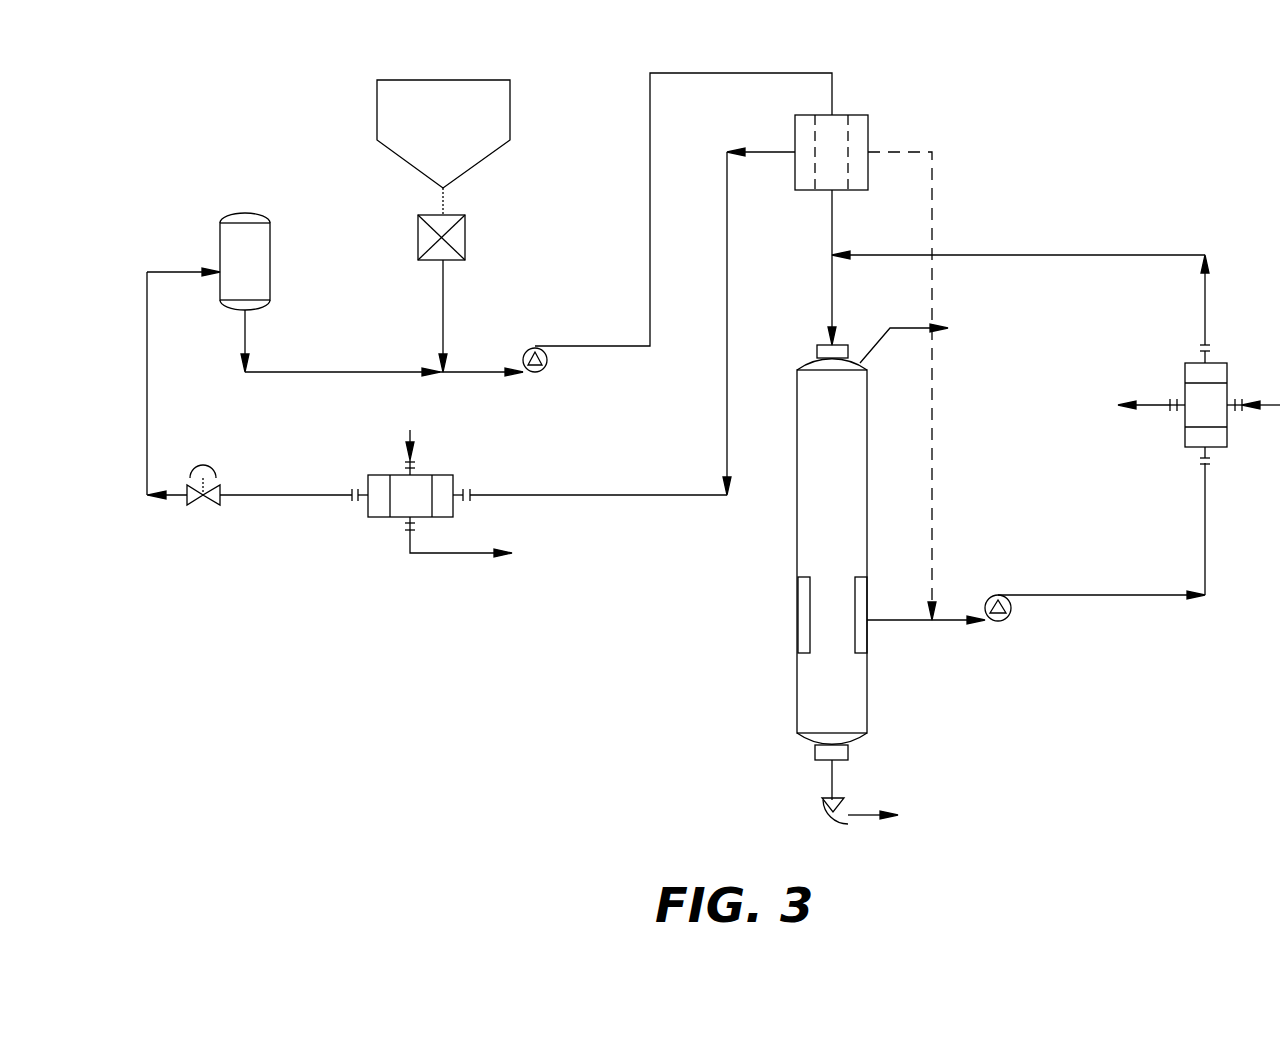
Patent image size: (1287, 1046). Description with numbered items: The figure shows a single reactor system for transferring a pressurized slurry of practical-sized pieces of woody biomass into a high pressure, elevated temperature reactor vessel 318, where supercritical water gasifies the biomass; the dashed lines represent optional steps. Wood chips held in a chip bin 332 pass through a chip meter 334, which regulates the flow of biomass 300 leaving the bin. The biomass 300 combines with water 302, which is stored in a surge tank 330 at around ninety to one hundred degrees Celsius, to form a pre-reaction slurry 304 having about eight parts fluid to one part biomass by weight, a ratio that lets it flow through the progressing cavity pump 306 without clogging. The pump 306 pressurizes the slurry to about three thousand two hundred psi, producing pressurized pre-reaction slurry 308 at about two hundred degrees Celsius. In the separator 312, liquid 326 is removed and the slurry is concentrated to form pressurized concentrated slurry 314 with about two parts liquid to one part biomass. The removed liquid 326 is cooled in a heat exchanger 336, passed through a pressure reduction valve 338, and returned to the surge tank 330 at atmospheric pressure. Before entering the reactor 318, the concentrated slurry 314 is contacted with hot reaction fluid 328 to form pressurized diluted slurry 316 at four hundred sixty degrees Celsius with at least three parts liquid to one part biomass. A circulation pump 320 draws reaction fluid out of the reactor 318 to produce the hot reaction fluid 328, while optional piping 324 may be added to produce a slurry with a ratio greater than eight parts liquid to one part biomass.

The biomass 300 is at (422, 316).
The water 302 is at (342, 343).
The pre-reaction slurry 304 is at (483, 358).
The progressing cavity pump 306 is at (555, 367).
The pressurized pre-reaction slurry 308 is at (683, 209).
The separator 312 is at (834, 135).
The pressurized concentrated slurry 314 is at (808, 222).
The pressurized diluted slurry 316 is at (995, 298).
The reactor vessel 318 is at (940, 590).
The circulation pump 320 is at (1036, 555).
The piping 324 is at (921, 386).
The liquid 326 is at (632, 307).
The hot reaction fluid 328 is at (1199, 395).
The surge tank 330 is at (208, 261).
The chip bin 332 is at (443, 147).
The chip meter 334 is at (461, 238).
The heat exchanger 336 is at (366, 493).
The pressure reduction valve 338 is at (185, 412).